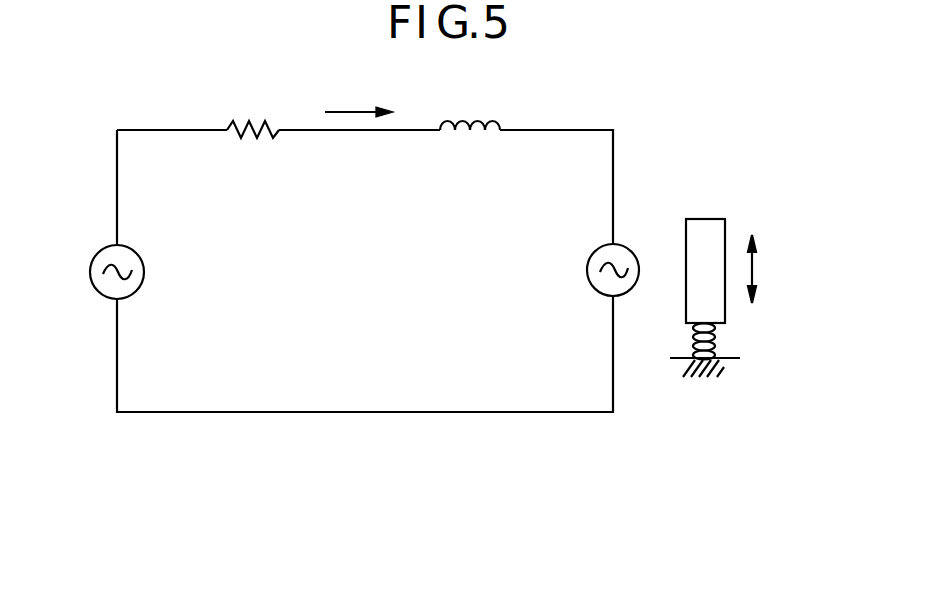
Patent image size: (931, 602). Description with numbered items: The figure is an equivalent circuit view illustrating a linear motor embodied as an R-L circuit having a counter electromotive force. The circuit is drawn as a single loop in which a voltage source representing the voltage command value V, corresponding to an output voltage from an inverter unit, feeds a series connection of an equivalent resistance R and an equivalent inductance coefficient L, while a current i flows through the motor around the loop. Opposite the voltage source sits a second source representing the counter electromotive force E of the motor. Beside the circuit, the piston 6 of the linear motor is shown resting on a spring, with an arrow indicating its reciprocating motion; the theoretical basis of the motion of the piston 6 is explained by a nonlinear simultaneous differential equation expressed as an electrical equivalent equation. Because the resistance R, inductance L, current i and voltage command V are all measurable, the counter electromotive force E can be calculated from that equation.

The piston 6 is at (710, 219).
The equivalent resistance R is at (253, 113).
The equivalent inductance coefficient L is at (470, 109).
The current i is at (359, 99).
The voltage command value V is at (100, 272).
The counter electromotive force E is at (627, 270).